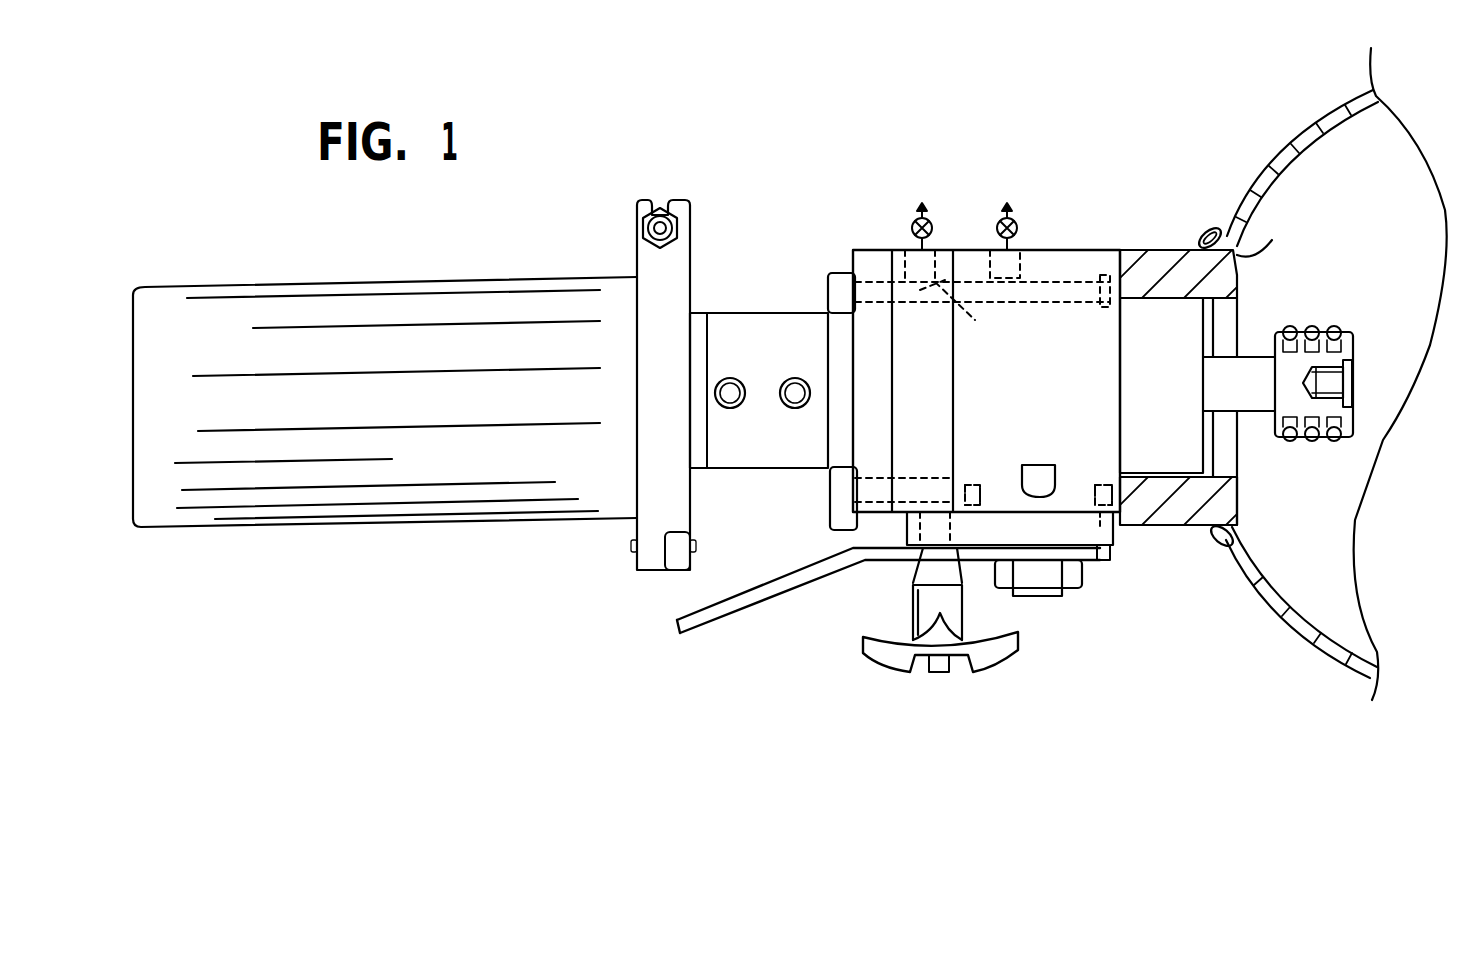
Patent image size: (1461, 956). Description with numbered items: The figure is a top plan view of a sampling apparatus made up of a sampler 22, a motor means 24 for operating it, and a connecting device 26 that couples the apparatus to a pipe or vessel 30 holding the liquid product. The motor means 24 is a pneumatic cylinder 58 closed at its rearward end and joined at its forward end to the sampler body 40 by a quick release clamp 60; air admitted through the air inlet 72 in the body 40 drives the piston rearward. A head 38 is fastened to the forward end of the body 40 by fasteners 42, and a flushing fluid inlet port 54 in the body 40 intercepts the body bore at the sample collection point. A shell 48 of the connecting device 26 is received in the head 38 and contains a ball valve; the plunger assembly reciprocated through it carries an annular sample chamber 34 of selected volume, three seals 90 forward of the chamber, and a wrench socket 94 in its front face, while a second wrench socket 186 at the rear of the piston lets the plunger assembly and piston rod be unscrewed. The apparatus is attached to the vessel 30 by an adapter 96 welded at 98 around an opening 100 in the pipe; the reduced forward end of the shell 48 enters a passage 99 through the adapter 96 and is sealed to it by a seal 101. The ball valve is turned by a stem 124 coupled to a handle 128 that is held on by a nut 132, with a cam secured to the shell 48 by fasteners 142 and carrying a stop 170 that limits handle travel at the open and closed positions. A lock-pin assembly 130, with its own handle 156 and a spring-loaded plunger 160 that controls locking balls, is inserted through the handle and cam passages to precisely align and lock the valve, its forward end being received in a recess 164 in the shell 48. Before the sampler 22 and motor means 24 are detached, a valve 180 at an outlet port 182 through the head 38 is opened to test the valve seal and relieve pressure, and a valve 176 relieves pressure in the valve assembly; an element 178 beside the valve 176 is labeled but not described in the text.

The sampler 22 is at (784, 121).
The motor means 24 is at (549, 119).
The connecting device 26 is at (1029, 91).
The pipe or vessel 30 is at (1292, 148).
The sample chamber 34 is at (1258, 345).
The head 38 is at (898, 250).
The sampler body 40 is at (722, 320).
The fasteners 42 is at (830, 297).
The shell 48 is at (968, 250).
The flushing fluid inlet port 54 is at (800, 393).
The cylinder 58 is at (250, 283).
The quick release clamp 60 is at (650, 262).
The air inlet 72 is at (733, 395).
The seals 90 is at (1334, 440).
The wrench socket 94 is at (1340, 383).
The adapter 96 is at (1155, 265).
The weld 98 is at (1212, 232).
The passage 99 is at (1218, 463).
The opening 100 is at (1280, 238).
The seal 101 is at (1135, 250).
The stem 124 is at (1065, 595).
The handle 128 is at (732, 607).
The lock-pin assembly 130 is at (913, 748).
The nut 132 is at (1052, 592).
The fasteners 142 is at (980, 490).
The handle 156 is at (1005, 652).
The plunger 160 is at (940, 672).
The recess 164 is at (1040, 478).
The stop 170 is at (1110, 557).
The valve 176 is at (1013, 248).
The valve port 178 is at (1015, 250).
The valve 180 is at (915, 250).
The outlet port 182 is at (935, 250).
The wrench socket 186 is at (1112, 572).